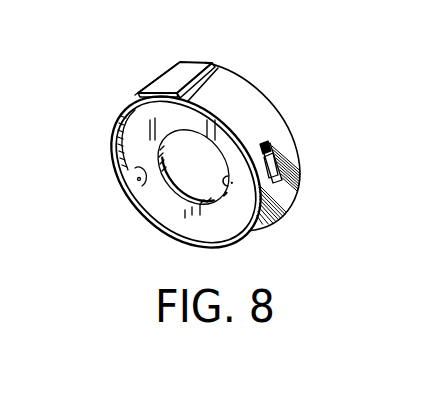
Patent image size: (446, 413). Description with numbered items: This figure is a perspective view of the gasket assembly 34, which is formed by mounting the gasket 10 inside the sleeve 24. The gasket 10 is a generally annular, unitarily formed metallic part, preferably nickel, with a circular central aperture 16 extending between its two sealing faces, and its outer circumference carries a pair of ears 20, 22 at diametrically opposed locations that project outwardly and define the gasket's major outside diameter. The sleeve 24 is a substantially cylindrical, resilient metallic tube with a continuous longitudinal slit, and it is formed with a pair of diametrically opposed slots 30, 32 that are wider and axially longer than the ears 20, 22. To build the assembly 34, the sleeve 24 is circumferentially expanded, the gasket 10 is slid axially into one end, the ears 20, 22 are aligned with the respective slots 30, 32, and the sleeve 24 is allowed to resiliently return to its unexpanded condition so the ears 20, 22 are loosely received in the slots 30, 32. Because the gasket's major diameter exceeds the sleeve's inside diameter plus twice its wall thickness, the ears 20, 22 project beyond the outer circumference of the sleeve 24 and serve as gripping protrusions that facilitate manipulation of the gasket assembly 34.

The gasket 10 is at (180, 210).
The central aperture 16 is at (229, 192).
The ear 20 is at (268, 163).
The ear 22 is at (138, 188).
The sleeve 24 is at (261, 86).
The slot 30 is at (262, 147).
The slot 32 is at (118, 143).
The gasket assembly 34 is at (129, 64).